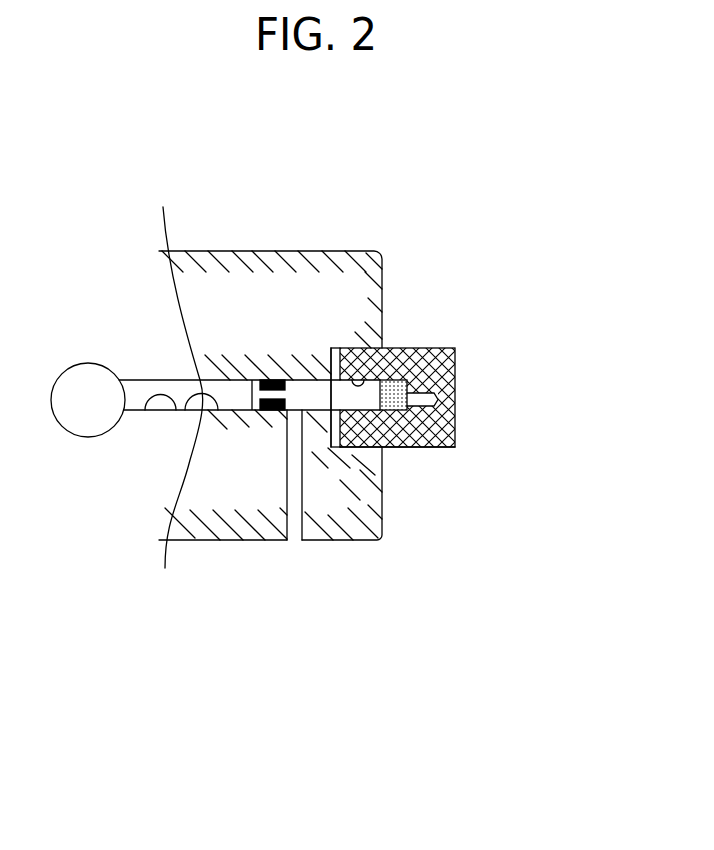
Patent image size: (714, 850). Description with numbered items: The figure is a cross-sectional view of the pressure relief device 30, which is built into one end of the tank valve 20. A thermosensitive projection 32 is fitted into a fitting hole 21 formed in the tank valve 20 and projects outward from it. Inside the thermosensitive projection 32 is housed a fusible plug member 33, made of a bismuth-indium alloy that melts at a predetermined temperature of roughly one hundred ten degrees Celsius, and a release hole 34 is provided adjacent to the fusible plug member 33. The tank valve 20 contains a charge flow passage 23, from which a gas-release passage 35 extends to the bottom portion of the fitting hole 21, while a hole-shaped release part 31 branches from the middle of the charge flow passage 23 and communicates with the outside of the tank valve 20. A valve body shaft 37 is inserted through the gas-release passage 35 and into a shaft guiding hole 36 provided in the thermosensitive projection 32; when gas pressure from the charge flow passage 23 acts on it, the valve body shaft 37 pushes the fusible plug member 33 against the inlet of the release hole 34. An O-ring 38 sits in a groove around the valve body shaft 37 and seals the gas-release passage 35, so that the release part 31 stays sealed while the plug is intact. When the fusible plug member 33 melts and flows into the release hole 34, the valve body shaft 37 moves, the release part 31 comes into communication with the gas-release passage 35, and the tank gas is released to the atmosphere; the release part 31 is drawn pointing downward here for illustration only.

The tank valve 20 is at (240, 251).
The fitting hole 21 is at (334, 415).
The charge flow passage 23 is at (90, 362).
The pressure relief device 30 is at (501, 167).
The release part 31 is at (295, 538).
The thermosensitive projection 32 is at (450, 349).
The fusible plug member 33 is at (406, 446).
The release hole 34 is at (443, 397).
The gas-release passage 35 is at (190, 406).
The shaft guiding hole 36 is at (362, 380).
The valve body shaft 37 is at (342, 397).
The O-ring 38 is at (266, 380).